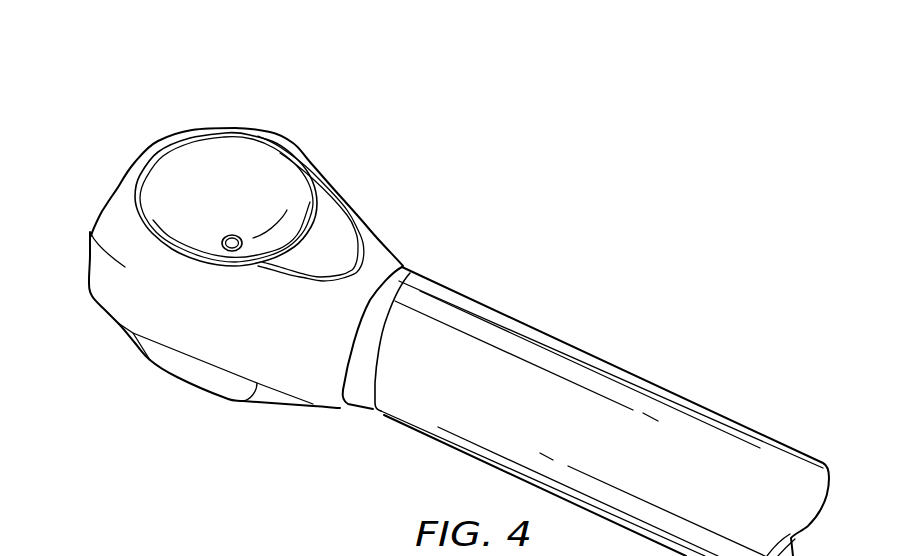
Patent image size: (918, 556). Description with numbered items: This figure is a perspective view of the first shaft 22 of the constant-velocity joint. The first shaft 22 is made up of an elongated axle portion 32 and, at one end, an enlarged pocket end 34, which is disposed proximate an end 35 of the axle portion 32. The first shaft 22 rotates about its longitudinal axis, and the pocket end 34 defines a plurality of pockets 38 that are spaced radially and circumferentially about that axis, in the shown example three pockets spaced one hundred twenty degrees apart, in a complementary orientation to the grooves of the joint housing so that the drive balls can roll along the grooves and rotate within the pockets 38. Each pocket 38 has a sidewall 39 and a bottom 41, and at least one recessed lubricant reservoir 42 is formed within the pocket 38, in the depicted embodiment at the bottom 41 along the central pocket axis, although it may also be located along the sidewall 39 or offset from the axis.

The first shaft 22 is at (510, 303).
The axle portion 32 is at (606, 402).
The pocket end 34 is at (90, 232).
The end 35 is at (447, 310).
The pocket 38 is at (213, 172).
The sidewall 39 is at (158, 196).
The bottom 41 is at (267, 233).
The recessed lubricant reservoir 42 is at (248, 222).